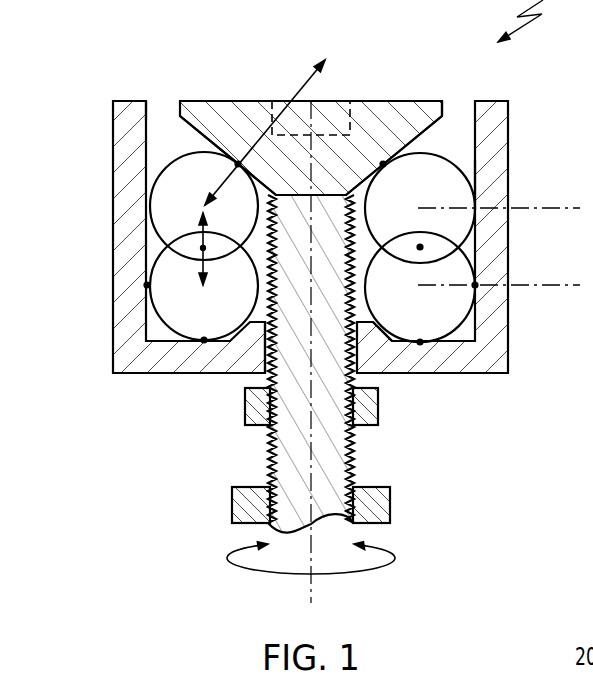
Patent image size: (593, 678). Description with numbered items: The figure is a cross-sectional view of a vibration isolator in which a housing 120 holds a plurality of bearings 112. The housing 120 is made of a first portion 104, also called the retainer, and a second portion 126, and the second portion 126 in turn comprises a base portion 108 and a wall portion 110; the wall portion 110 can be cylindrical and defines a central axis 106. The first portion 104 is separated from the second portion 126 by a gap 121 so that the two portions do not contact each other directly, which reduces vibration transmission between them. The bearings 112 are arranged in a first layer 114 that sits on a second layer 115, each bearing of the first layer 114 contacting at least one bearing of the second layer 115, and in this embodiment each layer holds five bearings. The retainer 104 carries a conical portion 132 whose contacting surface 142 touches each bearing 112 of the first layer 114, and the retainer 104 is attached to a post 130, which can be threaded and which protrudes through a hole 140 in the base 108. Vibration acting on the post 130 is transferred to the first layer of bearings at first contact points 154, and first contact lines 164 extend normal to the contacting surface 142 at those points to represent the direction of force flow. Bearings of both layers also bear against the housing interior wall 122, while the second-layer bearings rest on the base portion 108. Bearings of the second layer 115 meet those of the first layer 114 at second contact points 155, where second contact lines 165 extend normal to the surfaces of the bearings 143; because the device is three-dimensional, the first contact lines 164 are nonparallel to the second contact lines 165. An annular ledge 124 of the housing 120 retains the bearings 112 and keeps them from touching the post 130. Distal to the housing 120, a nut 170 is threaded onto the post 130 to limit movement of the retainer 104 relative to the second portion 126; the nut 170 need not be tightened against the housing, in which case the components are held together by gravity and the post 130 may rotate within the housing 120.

The housing 120 is at (128, 85).
The first portion 104 is at (213, 110).
The central axis 106 is at (312, 583).
The base portion 108 is at (165, 371).
The wall portion 110 is at (120, 327).
The bearings 112 is at (220, 328).
The first layer 114 is at (563, 210).
The second layer 115 is at (563, 287).
The gap 121 is at (163, 107).
The housing interior wall 122 is at (158, 172).
The annular ledge 124 is at (383, 331).
The second portion 126 is at (113, 118).
The post 130 is at (278, 442).
The conical portion 132 is at (383, 164).
The hole 140 is at (262, 358).
The contacting surface 142 is at (448, 128).
The surfaces of the bearings 143 is at (458, 188).
The first contact points 154 is at (238, 164).
The second contact points 155 is at (203, 248).
The first contact lines 164 is at (312, 75).
The second contact lines 165 is at (203, 233).
The nut 170 is at (374, 420).